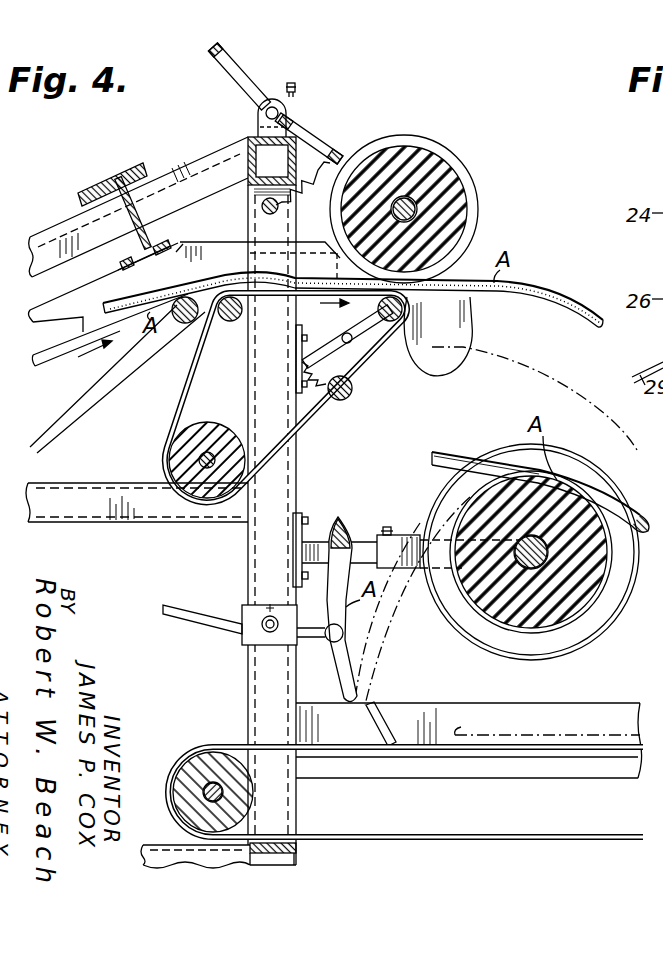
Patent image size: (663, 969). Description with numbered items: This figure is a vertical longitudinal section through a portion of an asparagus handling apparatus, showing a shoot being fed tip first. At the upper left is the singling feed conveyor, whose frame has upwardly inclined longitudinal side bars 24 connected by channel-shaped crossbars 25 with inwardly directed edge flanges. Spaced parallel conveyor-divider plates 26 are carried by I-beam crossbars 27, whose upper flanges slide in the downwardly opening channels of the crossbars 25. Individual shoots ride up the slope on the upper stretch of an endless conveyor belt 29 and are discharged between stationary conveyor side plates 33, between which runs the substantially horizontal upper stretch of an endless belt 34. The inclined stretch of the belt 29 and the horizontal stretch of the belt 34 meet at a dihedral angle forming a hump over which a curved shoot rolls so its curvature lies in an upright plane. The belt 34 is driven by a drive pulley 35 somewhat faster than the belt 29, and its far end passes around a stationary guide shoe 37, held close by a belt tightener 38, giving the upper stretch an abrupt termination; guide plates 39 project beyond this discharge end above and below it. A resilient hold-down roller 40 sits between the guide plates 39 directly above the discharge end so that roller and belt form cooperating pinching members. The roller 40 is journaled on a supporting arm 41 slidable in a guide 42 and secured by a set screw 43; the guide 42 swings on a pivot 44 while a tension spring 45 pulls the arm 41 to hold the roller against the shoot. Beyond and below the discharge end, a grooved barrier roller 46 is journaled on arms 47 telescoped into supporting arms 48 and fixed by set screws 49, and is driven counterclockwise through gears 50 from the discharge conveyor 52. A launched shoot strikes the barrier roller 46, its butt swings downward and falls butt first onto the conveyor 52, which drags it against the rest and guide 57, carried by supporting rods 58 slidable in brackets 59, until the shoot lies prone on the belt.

The longitudinal side bars 24 is at (43, 240).
The crossbars 25 is at (117, 177).
The conveyor-divider plates 26 is at (53, 312).
The crossbars 27 is at (122, 255).
The conveyor belt 29 is at (53, 358).
The stationary conveyor side plates 33 is at (213, 243).
The endless belt 34 is at (181, 392).
The drive pulley 35 is at (180, 438).
The guide shoe 37 is at (392, 322).
The belt tightener 38 is at (351, 396).
The guide plates 39 is at (477, 321).
The hold-down roller 40 is at (458, 184).
The supporting arm 41 is at (240, 73).
The guide 42 is at (300, 101).
The set screw 43 is at (311, 80).
The pivot 44 is at (258, 113).
The tension spring 45 is at (326, 150).
The barrier roller 46 is at (538, 582).
The arms 47 is at (395, 547).
The supporting arms 48 is at (300, 549).
The set screws 49 is at (387, 527).
The gears 50 is at (626, 577).
The discharge conveyor 52 is at (432, 750).
The rest and guide 57 is at (348, 683).
The supporting rods 58 is at (300, 606).
The brackets 59 is at (242, 637).